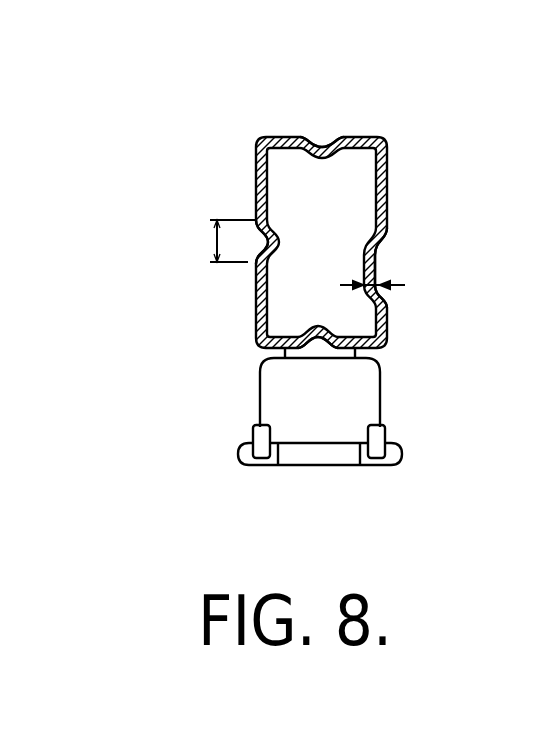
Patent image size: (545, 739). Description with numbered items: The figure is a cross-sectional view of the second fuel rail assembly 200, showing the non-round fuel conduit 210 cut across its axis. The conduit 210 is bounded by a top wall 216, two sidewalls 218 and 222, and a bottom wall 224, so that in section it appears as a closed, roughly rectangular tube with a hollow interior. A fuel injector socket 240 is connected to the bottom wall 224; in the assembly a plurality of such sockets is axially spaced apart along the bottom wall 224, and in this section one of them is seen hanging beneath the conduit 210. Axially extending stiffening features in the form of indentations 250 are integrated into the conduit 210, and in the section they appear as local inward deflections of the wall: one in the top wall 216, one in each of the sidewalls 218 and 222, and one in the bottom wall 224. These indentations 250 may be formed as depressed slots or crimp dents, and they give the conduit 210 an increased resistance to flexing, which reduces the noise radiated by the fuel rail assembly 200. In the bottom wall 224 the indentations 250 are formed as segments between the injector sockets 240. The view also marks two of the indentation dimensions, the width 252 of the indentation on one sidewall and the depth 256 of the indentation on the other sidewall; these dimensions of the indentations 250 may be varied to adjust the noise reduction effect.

The second fuel rail assembly 200 is at (282, 306).
The non-round fuel conduit 210 is at (282, 216).
The top wall 216 is at (278, 140).
The sidewall 218 is at (385, 187).
The sidewall 222 is at (254, 190).
The bottom wall 224 is at (272, 352).
The fuel injector socket 240 is at (345, 422).
The indentations 250 is at (320, 148).
The width 252 is at (215, 243).
The depth 256 is at (380, 302).